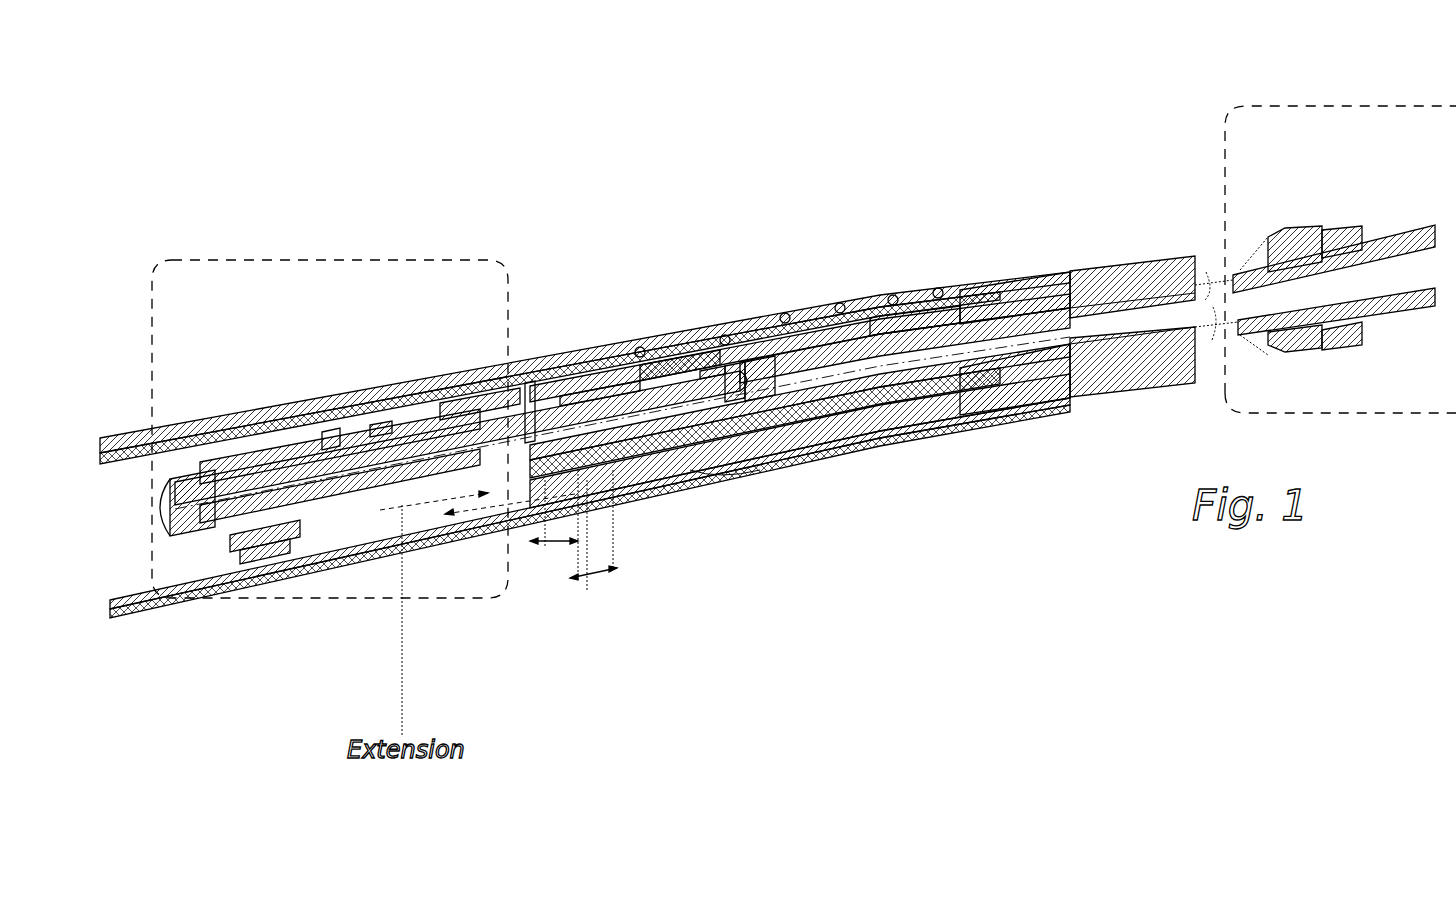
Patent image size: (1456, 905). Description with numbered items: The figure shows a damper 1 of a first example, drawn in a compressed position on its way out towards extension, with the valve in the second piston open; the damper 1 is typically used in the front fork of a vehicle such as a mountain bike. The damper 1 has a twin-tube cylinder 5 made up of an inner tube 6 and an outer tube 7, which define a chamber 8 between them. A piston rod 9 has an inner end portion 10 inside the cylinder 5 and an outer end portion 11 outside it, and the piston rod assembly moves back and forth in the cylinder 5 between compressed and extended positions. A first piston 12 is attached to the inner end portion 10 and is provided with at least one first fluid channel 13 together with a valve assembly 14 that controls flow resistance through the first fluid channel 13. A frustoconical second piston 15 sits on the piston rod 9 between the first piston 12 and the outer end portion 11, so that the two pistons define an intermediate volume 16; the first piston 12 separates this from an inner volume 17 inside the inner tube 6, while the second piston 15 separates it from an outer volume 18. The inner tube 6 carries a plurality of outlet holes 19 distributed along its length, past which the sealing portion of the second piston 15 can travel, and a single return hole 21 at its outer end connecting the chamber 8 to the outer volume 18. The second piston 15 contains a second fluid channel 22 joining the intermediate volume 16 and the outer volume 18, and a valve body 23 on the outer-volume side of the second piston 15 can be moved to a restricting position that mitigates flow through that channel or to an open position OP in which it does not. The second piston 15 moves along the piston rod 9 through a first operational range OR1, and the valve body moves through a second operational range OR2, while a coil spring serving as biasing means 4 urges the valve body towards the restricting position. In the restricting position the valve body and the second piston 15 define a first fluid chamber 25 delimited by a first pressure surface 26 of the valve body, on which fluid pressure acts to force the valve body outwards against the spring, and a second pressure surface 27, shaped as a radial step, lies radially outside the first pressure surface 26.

The damper 1 is at (778, 238).
The biasing means 4 is at (810, 330).
The twin-tube cylinder 5 is at (577, 348).
The inner tube 6 is at (530, 398).
The outer tube 7 is at (652, 345).
The chamber 8 is at (632, 345).
The piston rod 9 is at (430, 428).
The inner end portion 10 is at (292, 258).
The outer end portion 11 is at (1313, 106).
The first piston 12 is at (215, 428).
The first fluid channel 13 is at (283, 430).
The valve assembly 14 is at (295, 425).
The second piston 15 is at (690, 330).
The intermediate volume 16 is at (450, 425).
The inner volume 17 is at (165, 478).
The outer volume 18 is at (918, 322).
The outlet holes 19 is at (640, 345).
The return hole 21 is at (968, 278).
The second fluid channel 22 is at (735, 325).
The valve body 23 is at (710, 325).
The first fluid chamber 25 is at (677, 490).
The first pressure surface 26 is at (723, 483).
The second pressure surface 27 is at (780, 470).
The first operational range OR1 is at (578, 541).
The second operational range OR2 is at (617, 568).
The open position OP is at (728, 550).